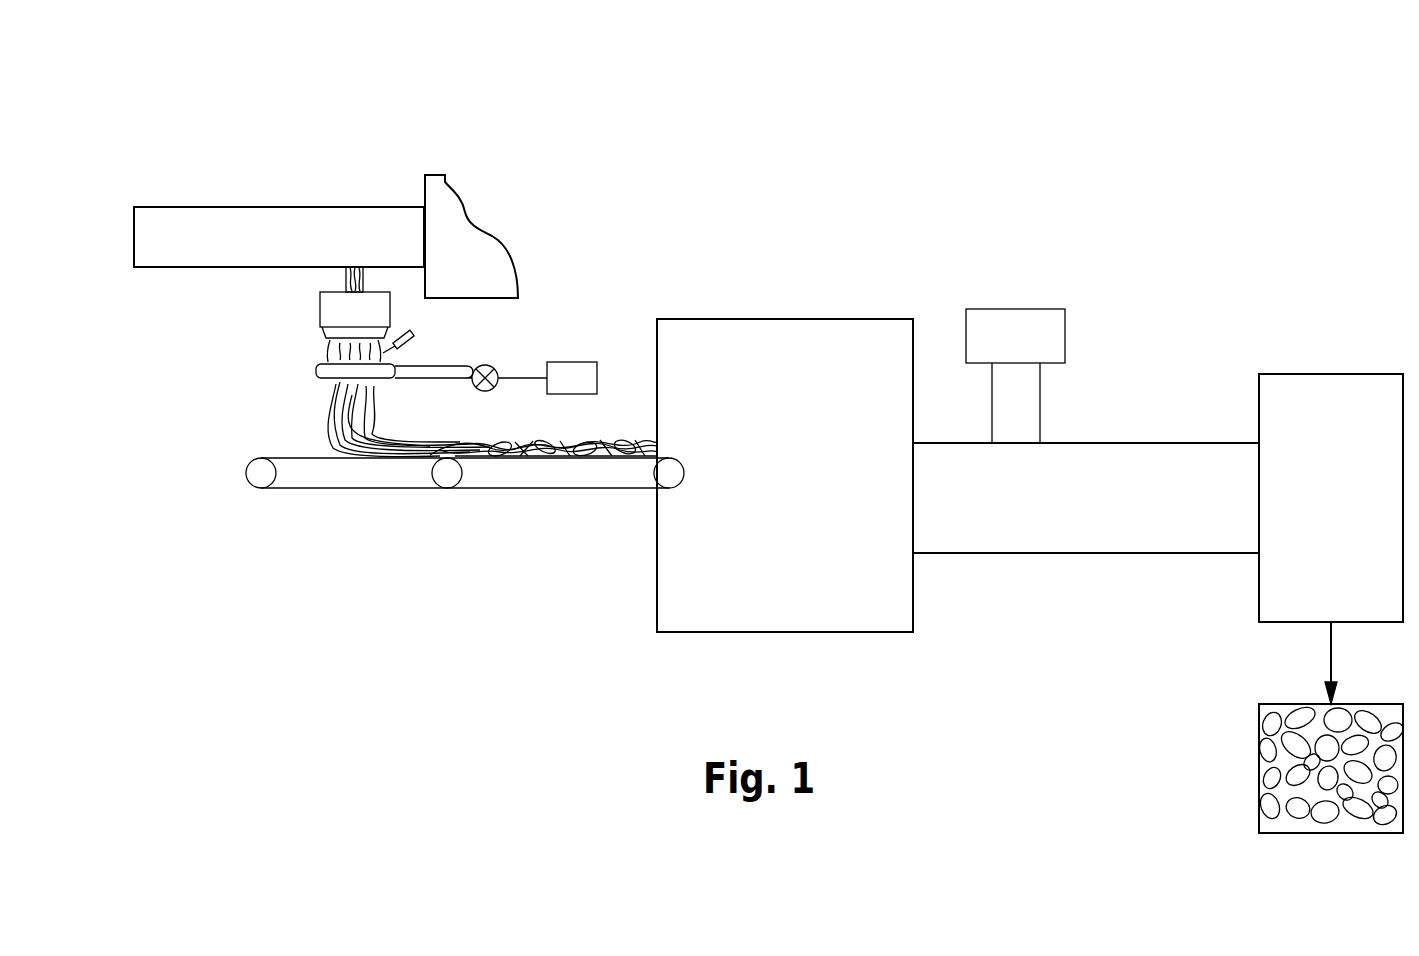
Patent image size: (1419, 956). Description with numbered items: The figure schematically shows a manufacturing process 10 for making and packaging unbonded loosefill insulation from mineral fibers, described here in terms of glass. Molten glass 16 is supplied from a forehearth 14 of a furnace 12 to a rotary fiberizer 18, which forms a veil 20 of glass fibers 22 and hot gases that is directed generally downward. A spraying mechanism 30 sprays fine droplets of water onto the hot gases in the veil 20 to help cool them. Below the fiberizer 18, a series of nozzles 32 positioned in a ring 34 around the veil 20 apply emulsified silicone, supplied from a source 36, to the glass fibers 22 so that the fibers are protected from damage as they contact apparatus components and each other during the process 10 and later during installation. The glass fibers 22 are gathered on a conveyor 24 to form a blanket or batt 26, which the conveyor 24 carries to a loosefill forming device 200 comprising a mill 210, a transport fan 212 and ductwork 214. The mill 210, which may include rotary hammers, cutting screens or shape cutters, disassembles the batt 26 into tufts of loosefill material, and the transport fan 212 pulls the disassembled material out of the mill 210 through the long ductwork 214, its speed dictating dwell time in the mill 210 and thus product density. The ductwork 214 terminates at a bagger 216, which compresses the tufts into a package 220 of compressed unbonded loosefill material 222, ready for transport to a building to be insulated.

The manufacturing process 10 is at (388, 112).
The furnace 12 is at (500, 238).
The forehearth 14 is at (338, 207).
The molten glass 16 is at (346, 278).
The rotary fiberizer 18 is at (320, 307).
The veil 20 is at (327, 349).
The glass fibers 22 is at (367, 418).
The conveyor 24 is at (385, 488).
The batt 26 is at (428, 440).
The spraying mechanism 30 is at (412, 333).
The nozzle 32 is at (398, 364).
The ring 34 is at (316, 374).
The source 36 is at (566, 362).
The loosefill forming device 200 is at (849, 198).
The mill 210 is at (728, 338).
The transport fan 212 is at (1000, 327).
The ductwork 214 is at (1112, 440).
The bagger 216 is at (1328, 372).
The package 220 is at (1259, 745).
The loosefill material 222 is at (1290, 725).